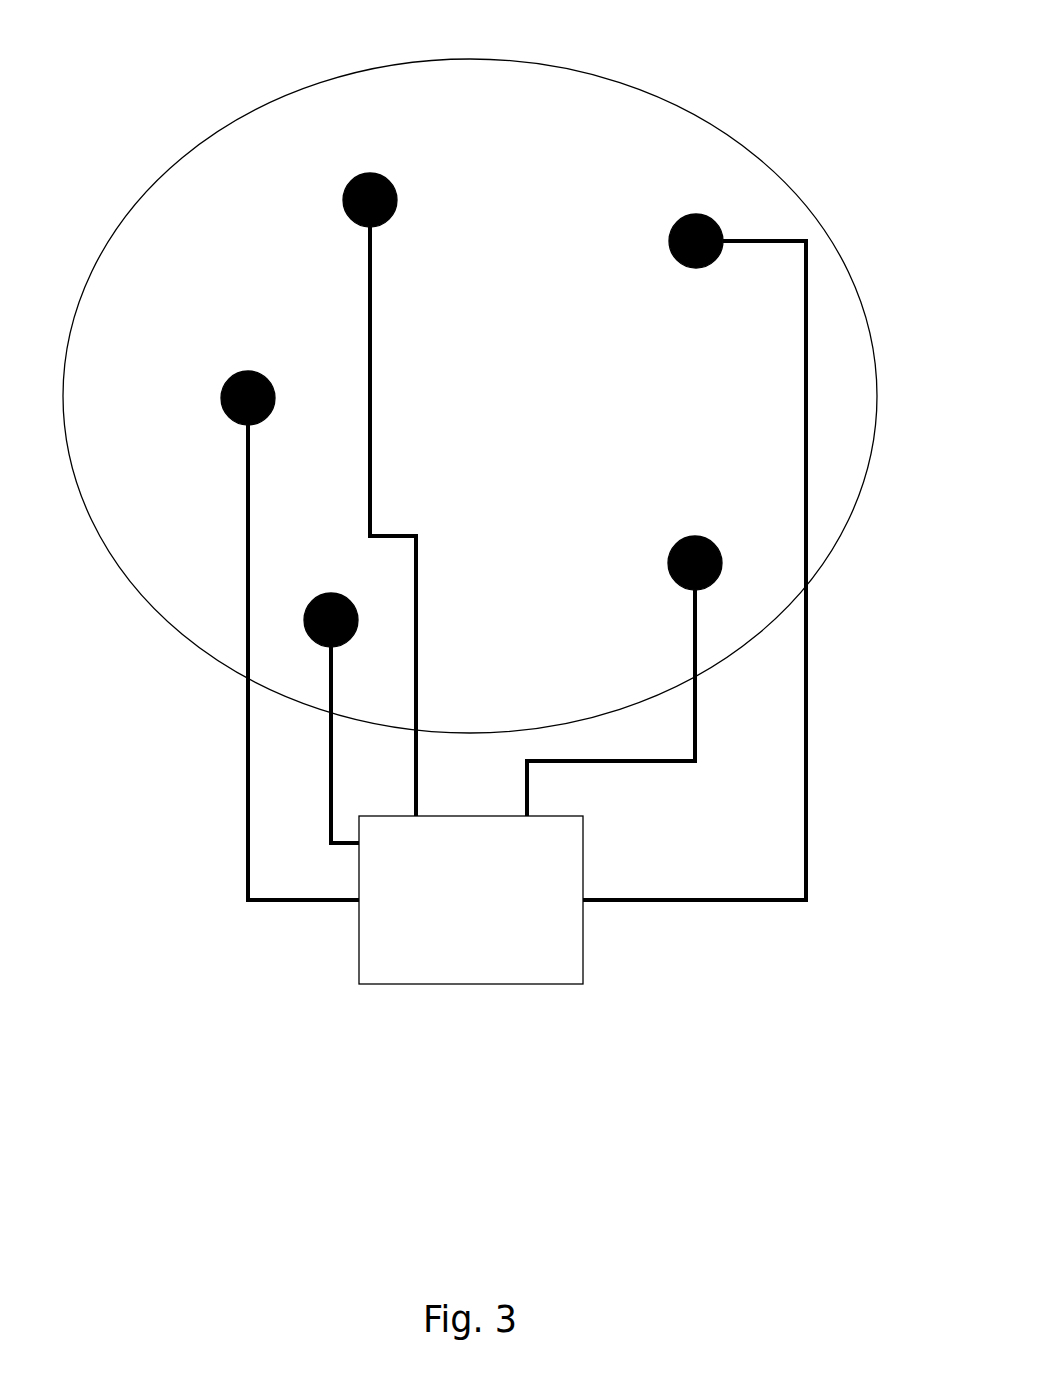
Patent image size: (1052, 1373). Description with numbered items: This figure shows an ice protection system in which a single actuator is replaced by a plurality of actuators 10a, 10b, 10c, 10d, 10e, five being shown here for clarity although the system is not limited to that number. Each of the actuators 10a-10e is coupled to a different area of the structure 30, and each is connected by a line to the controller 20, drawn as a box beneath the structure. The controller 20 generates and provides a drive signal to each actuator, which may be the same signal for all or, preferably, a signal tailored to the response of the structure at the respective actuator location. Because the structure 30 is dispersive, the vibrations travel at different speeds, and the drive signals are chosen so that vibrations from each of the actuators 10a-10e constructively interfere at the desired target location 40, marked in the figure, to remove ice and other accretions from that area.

The actuator 10a is at (230, 415).
The actuator 10b is at (312, 645).
The actuator 10c is at (348, 178).
The actuator 10d is at (715, 582).
The actuator 10e is at (715, 222).
The controller 20 is at (528, 984).
The structure 30 is at (835, 440).
The target location 40 is at (477, 385).